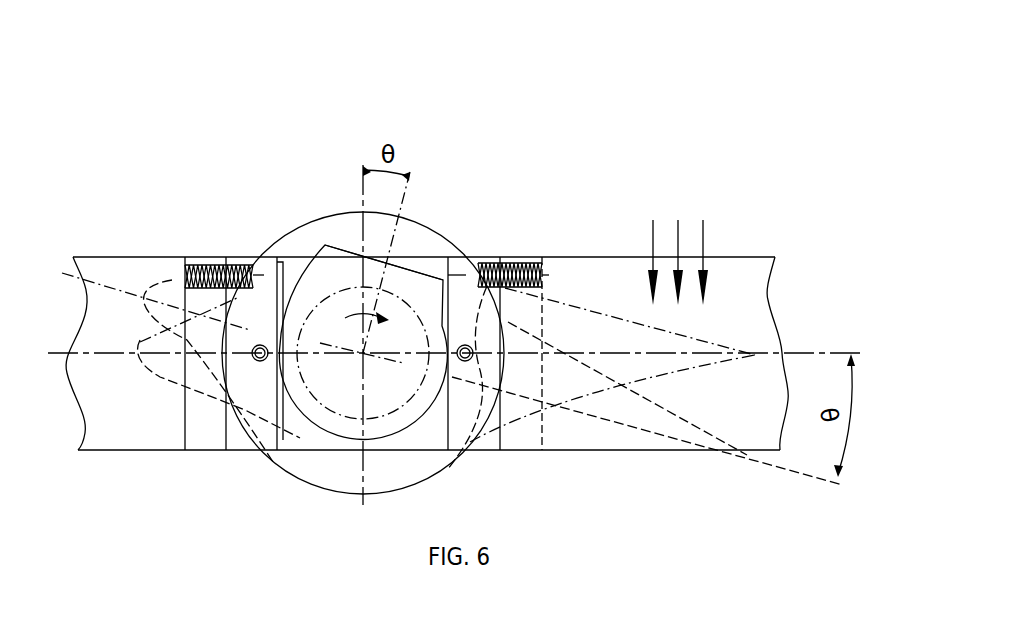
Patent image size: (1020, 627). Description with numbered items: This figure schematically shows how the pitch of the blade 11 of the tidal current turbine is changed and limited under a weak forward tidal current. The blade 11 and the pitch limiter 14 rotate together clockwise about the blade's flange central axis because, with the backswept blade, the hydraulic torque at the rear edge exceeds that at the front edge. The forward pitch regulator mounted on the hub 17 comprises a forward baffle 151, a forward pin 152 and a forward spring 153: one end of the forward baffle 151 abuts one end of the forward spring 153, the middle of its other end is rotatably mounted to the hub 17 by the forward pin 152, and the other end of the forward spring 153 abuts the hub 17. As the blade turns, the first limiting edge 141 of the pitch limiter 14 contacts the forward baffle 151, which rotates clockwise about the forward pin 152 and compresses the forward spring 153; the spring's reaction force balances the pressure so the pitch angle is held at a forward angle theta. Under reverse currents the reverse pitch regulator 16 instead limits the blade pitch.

The blade 11 is at (168, 342).
The pitch limiter 14 is at (340, 277).
The reverse pitch regulator 16 is at (223, 265).
The hub 17 is at (595, 277).
The first limiting edge 141 is at (446, 275).
The forward baffle 151 is at (461, 268).
The forward pin 152 is at (500, 267).
The forward spring 153 is at (538, 267).